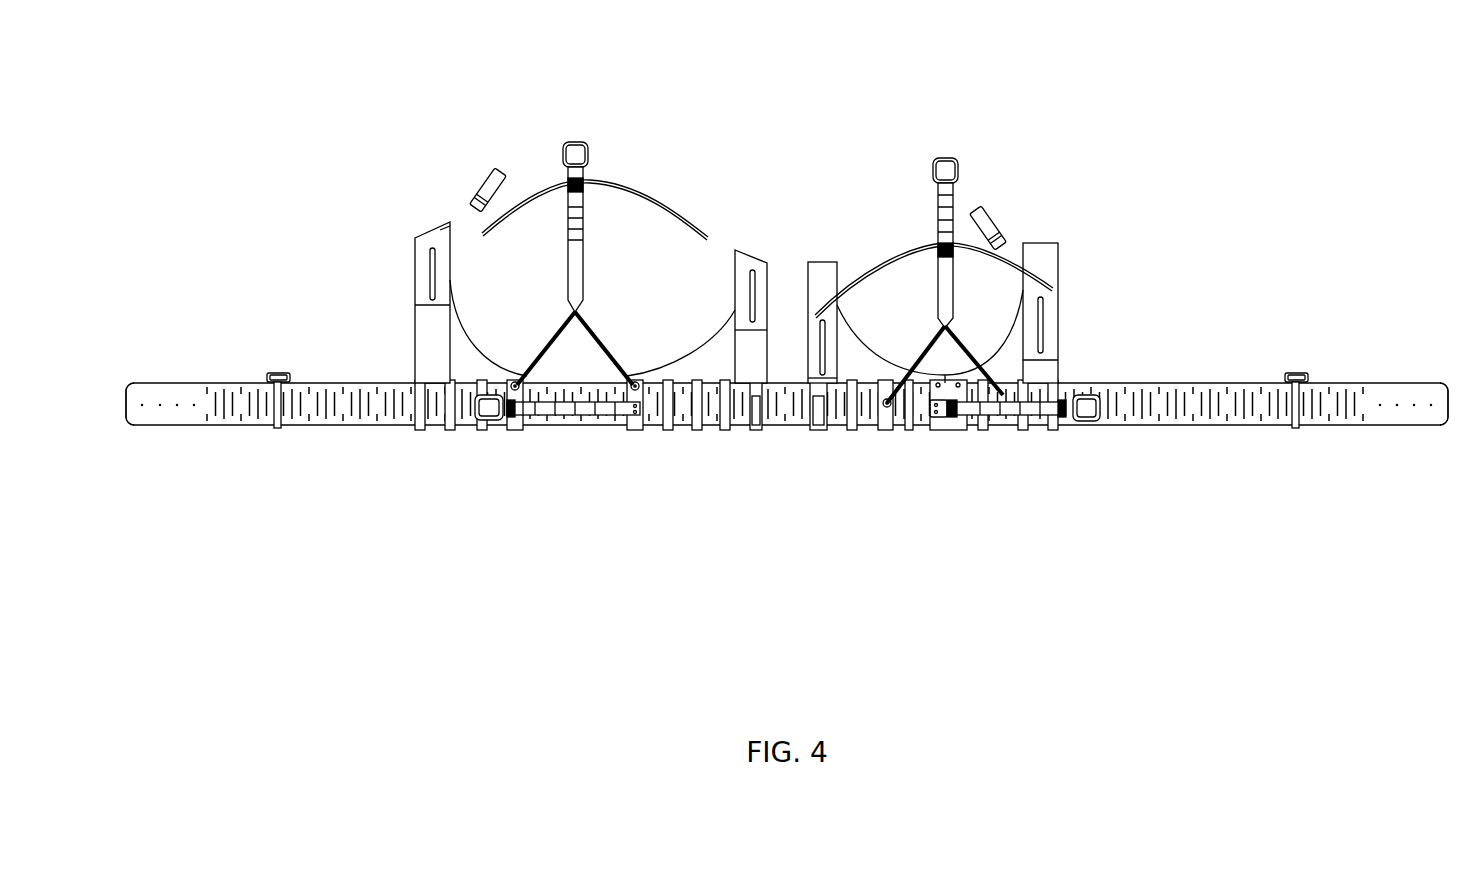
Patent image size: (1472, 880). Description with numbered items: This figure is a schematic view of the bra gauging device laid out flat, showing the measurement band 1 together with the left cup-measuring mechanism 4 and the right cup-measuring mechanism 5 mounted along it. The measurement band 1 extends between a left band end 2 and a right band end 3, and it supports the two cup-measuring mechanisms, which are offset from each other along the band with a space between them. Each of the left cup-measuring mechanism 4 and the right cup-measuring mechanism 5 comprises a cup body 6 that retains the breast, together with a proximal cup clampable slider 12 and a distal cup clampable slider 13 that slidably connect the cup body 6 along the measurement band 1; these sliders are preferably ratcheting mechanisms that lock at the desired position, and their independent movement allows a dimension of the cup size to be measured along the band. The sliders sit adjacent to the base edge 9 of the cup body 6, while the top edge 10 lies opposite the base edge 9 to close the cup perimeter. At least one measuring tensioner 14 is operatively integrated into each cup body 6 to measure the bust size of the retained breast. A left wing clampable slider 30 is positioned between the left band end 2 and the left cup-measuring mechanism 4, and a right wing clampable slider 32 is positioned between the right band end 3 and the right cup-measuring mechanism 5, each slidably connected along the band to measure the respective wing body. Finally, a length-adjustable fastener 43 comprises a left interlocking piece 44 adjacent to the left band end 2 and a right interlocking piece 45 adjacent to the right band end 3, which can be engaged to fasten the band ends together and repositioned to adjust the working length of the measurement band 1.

The measurement band 1 is at (333, 425).
The left band end 2 is at (1448, 428).
The right band end 3 is at (127, 433).
The left cup-measuring mechanism 4 is at (1011, 99).
The right cup-measuring mechanism 5 is at (645, 60).
The cup body 6 is at (712, 262).
The base edge 9 is at (577, 438).
The top edge 10 is at (648, 197).
The proximal cup clampable slider 12 is at (725, 427).
The distal cup clampable slider 13 is at (418, 427).
The measuring tensioner 14 is at (573, 127).
The left wing clampable slider 30 is at (1296, 373).
The right wing clampable slider 32 is at (283, 373).
The length-adjustable fastener 43 is at (173, 370).
The left interlocking piece 44 is at (1415, 400).
The right interlocking piece 45 is at (180, 392).